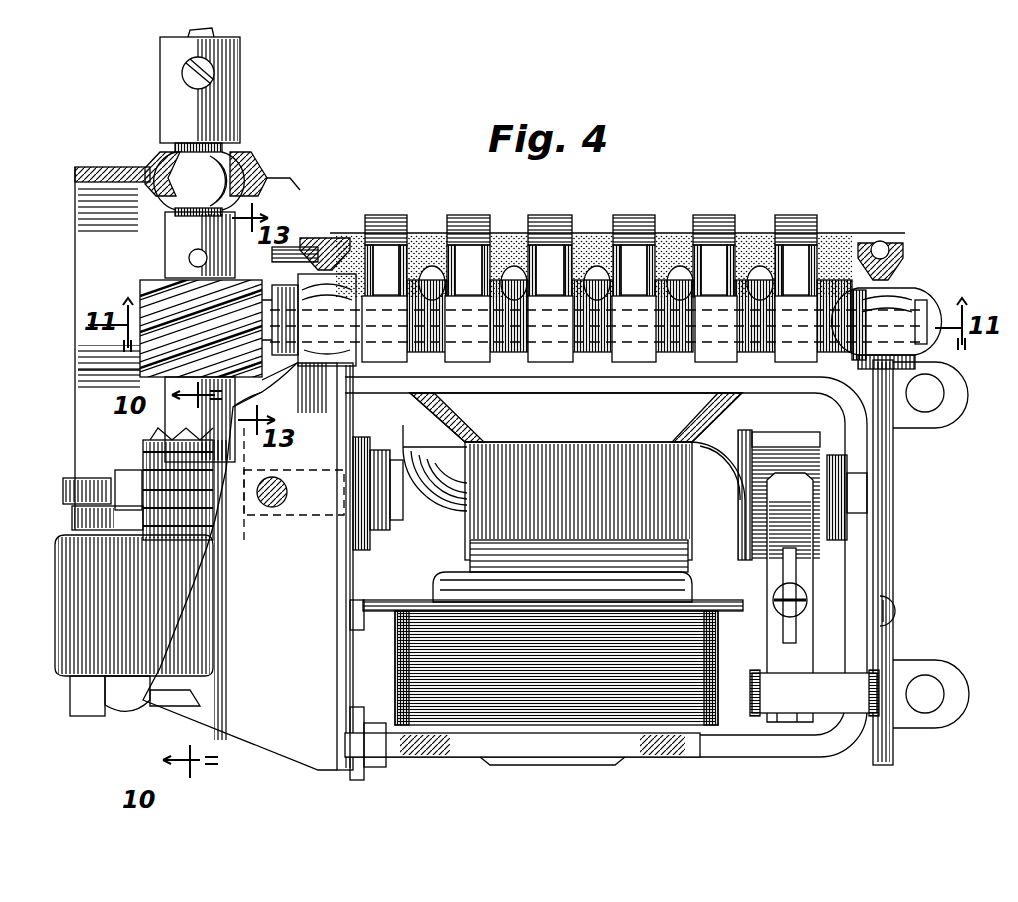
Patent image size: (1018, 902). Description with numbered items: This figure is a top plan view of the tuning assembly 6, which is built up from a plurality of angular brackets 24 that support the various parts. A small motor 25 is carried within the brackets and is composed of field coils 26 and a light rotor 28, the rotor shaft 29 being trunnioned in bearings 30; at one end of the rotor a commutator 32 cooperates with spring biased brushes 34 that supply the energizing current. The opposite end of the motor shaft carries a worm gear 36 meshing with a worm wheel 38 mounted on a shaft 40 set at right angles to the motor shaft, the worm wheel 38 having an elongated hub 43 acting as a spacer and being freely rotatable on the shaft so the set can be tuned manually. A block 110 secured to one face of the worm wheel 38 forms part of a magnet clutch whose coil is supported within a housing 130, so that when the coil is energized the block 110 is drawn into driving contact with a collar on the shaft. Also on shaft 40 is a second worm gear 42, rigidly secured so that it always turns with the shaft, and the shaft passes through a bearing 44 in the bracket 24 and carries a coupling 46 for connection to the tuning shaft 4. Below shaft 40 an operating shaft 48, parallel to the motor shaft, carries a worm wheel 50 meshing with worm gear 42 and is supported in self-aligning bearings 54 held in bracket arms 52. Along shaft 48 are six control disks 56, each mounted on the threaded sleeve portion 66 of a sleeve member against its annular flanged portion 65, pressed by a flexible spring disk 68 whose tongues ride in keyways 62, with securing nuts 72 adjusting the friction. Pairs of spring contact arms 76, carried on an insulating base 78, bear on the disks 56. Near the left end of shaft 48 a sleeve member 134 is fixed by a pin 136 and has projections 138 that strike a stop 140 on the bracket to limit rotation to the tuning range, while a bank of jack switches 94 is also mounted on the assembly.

The tuning shaft 4 is at (205, 31).
The coupling 46 is at (230, 82).
The shaft 40 is at (190, 148).
The worm wheel 50 is at (190, 177).
The bearing 44 is at (250, 160).
The angular brackets 24 is at (92, 178).
The second worm gear 42 is at (140, 290).
The pin 136 is at (276, 318).
The projections 138 is at (298, 336).
The stop 140 is at (302, 246).
The securing nuts 72 is at (667, 272).
The spring contact arms 76 is at (380, 223).
The insulating base 78 is at (418, 250).
The control disks 56 is at (465, 250).
The flexible spring disk 68 is at (570, 252).
The annular flanged portion 65 is at (797, 262).
The threaded sleeve portion 66 is at (857, 297).
The bracket arms 52 is at (332, 246).
The self-aligning bearings 54 is at (352, 310).
The keyways 62 is at (912, 320).
The operating shaft 48 is at (912, 348).
The tuning assembly 6 is at (892, 557).
The shaft 29 is at (132, 478).
The worm gear 36 is at (183, 457).
The elongated hub 43 is at (165, 438).
The worm wheel 38 is at (88, 482).
The block 110 is at (80, 514).
The housing 130 is at (80, 562).
The sleeve member 134 is at (262, 375).
The jack switches 94 is at (420, 373).
The rotor 28 is at (518, 470).
The bearings 30 is at (366, 522).
The commutator 32 is at (797, 447).
The spring biased brushes 34 is at (773, 567).
The field coils 26 is at (691, 652).
The motor 25 is at (691, 683).